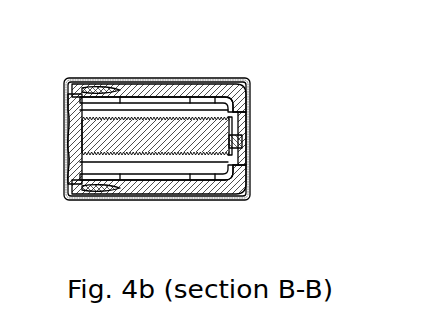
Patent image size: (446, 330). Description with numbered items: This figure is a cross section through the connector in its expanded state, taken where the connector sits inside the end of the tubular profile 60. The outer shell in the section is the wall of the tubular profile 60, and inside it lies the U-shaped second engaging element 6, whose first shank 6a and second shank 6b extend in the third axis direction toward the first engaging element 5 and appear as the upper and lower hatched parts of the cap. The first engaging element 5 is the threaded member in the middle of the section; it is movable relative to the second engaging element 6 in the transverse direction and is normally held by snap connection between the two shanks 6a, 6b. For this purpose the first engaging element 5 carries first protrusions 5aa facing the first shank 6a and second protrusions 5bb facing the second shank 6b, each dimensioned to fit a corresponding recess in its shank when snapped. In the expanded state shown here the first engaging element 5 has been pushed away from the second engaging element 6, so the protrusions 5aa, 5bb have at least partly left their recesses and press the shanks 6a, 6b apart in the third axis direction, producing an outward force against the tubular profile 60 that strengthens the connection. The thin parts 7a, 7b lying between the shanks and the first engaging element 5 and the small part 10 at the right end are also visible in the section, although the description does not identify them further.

The tubular profile 60 is at (63, 80).
The first shank 6a is at (213, 87).
The second shank 6b is at (220, 190).
The second engaging element 6 is at (243, 108).
The upper inner sleeve 7a is at (176, 100).
The lower inner sleeve 7b is at (125, 178).
The first engaging element 5 is at (72, 148).
The first protrusions 5aa is at (100, 91).
The second protrusions 5bb is at (100, 188).
The locking element 10 is at (243, 142).